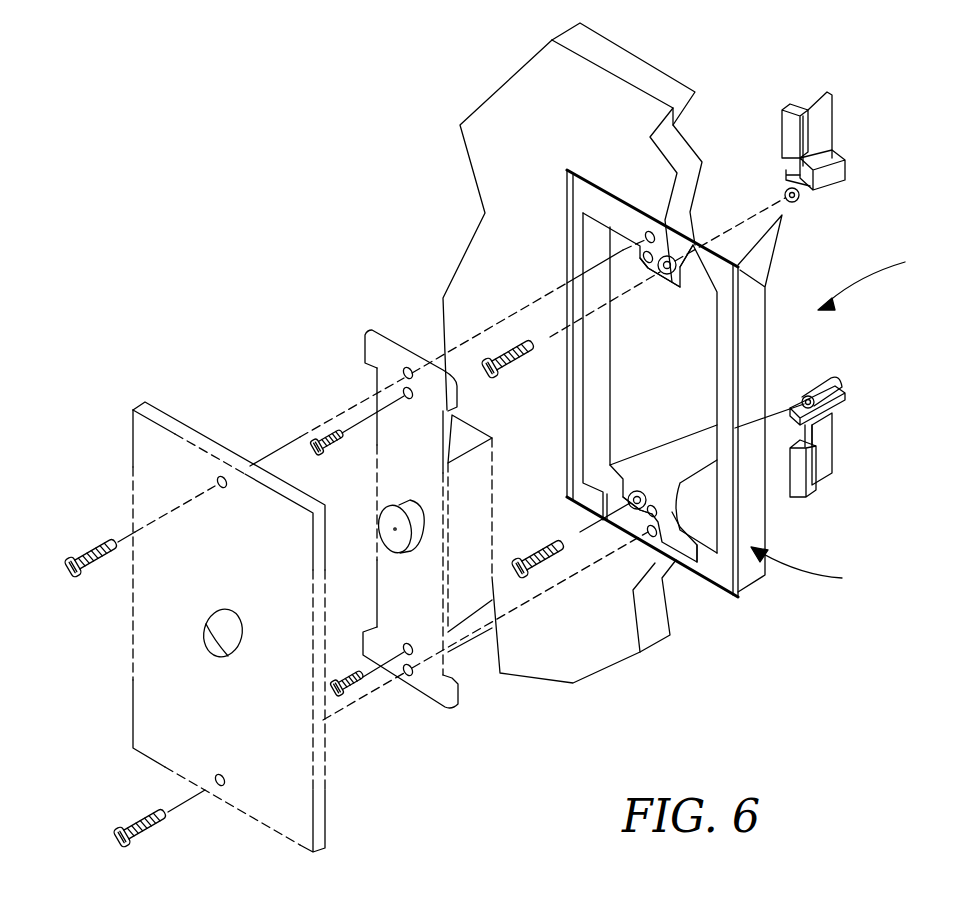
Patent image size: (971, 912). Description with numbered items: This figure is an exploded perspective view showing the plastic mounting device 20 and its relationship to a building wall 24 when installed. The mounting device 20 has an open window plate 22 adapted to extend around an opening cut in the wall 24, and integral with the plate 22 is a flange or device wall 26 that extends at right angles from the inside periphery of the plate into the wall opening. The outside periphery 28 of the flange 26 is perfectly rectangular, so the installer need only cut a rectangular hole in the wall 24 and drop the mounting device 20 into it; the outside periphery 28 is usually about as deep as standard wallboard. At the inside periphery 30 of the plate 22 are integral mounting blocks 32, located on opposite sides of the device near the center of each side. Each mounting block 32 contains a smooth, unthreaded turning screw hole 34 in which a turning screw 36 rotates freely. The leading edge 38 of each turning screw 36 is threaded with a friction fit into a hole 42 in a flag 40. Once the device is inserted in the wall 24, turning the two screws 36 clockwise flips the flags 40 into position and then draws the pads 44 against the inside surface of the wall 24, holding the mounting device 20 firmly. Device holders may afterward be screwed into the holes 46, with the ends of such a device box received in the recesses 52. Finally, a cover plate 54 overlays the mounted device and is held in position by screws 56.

The plastic mounting device 20 is at (878, 278).
The open window plate 22 is at (722, 573).
The wall 24 is at (650, 82).
The flange or device wall 26 is at (812, 569).
The outside periphery 28 is at (768, 423).
The inside periphery 30 is at (650, 522).
The mounting blocks 32 is at (668, 276).
The turning screw holes 34 is at (672, 258).
The turning screws 36 is at (533, 366).
The leading edge 38 is at (546, 298).
The flags 40 is at (836, 292).
The hole 42 is at (799, 202).
The pads 44 is at (790, 133).
The holes 46 is at (651, 231).
The recesses 52 is at (640, 230).
The cover plate 54 is at (285, 559).
The screws 56 is at (97, 548).